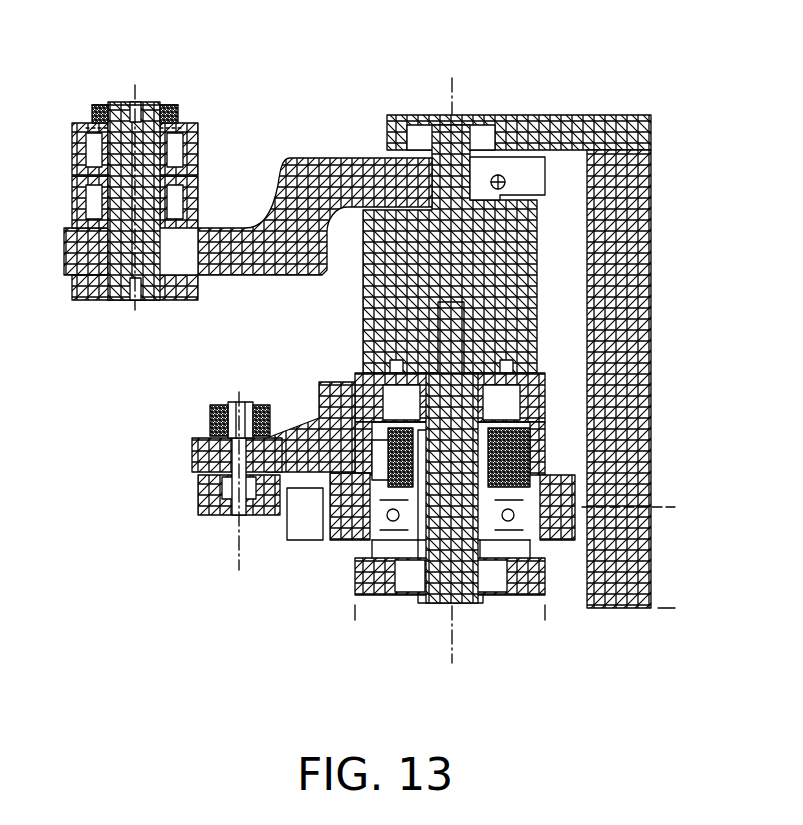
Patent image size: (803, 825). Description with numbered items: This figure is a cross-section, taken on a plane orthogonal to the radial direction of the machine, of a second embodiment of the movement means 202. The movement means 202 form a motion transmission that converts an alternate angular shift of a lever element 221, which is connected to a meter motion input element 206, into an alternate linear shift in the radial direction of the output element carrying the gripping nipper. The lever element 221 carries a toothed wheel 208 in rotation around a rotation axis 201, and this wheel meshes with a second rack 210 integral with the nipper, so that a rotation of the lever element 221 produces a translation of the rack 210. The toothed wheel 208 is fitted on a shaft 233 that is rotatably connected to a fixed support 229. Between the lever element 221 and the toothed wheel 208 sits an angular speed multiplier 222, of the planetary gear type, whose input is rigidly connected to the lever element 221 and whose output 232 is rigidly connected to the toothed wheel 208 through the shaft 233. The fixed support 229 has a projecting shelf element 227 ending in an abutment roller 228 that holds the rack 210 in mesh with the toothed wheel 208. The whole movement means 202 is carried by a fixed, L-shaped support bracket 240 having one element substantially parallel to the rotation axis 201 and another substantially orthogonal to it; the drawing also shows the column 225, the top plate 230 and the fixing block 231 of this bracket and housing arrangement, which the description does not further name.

The rotation axis 201 is at (455, 90).
The movement means 202 is at (185, 405).
The meter motion input element 206 is at (62, 150).
The toothed wheel 208 is at (570, 518).
The second rack 210 is at (297, 545).
The lever element 221 is at (312, 163).
The angular speed multiplier 222 is at (503, 310).
The support column 225 is at (635, 257).
The projecting shelf element 227 is at (326, 405).
The abutment roller 228 is at (198, 500).
The fixed support 229 is at (547, 387).
The top plate 230 is at (580, 122).
The fixing block 231 is at (470, 130).
The output 232 is at (440, 330).
The shaft 233 is at (458, 575).
The L-shaped support bracket 240 is at (656, 167).